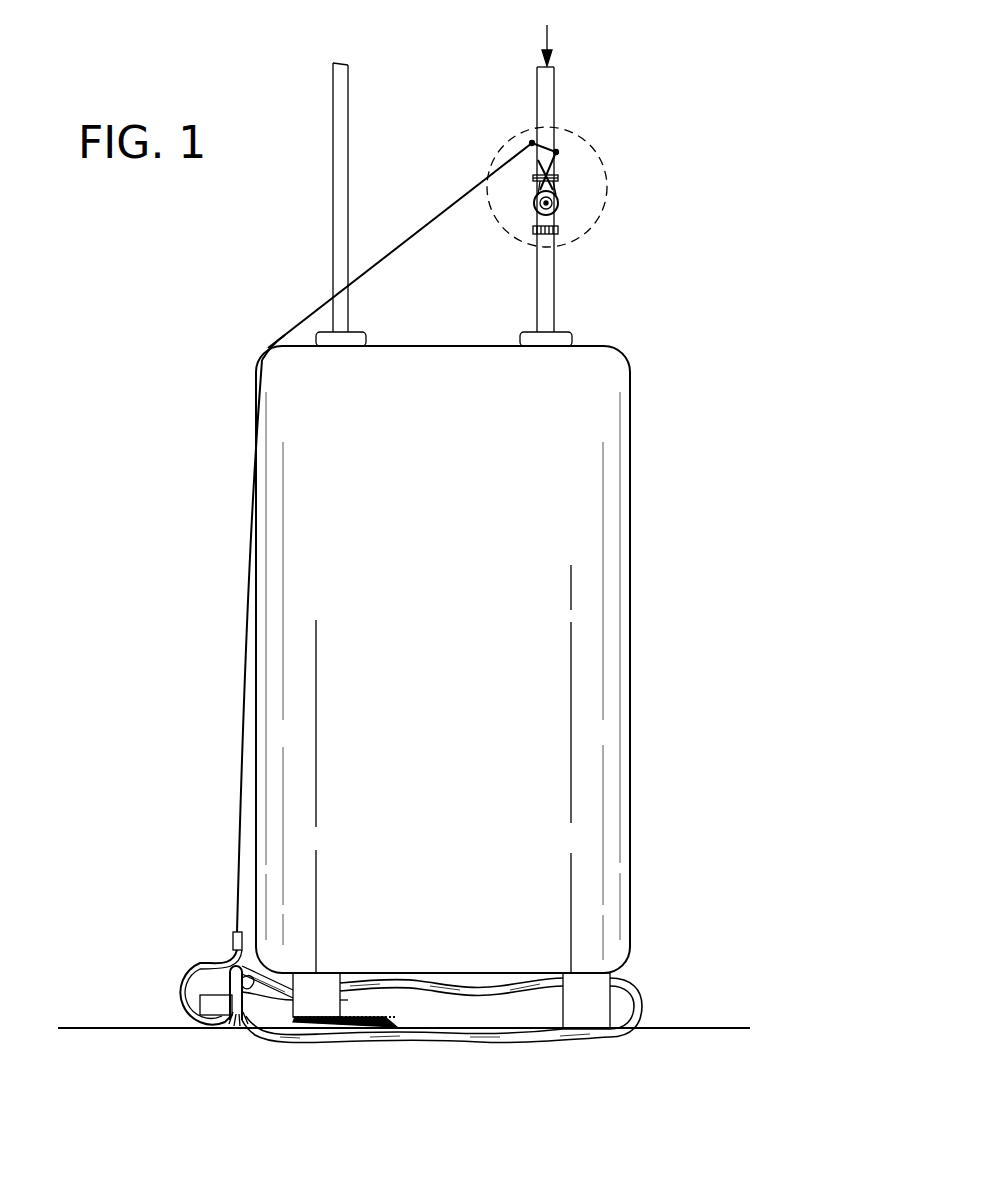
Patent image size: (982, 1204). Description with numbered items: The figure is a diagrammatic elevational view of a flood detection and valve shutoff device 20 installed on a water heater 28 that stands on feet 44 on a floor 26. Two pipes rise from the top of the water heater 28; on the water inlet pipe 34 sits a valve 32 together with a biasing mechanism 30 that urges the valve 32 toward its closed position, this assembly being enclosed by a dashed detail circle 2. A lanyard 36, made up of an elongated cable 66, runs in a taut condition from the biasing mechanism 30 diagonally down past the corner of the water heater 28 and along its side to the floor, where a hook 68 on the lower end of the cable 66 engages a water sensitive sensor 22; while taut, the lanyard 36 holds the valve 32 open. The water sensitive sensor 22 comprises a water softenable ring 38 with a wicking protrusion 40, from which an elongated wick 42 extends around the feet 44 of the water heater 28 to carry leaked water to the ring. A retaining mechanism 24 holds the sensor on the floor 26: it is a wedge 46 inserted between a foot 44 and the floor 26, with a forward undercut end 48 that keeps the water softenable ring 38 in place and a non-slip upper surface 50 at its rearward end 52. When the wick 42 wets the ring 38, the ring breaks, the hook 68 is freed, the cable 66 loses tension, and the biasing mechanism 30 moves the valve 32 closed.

The pulley assembly 2 is at (583, 126).
The flood detection and valve shutoff device 20 is at (399, 224).
The water sensitive sensor 22 is at (166, 972).
The retaining mechanism 24 is at (382, 1011).
The floor 26 is at (90, 1028).
The water heater 28 is at (612, 826).
The biasing mechanism 30 is at (570, 205).
The valve 32 is at (540, 232).
The water inlet pipe 34 is at (542, 102).
The lanyard 36 is at (298, 312).
The water softenable ring 38 is at (237, 1008).
The wicking protrusion 40 is at (237, 1026).
The elongated wick 42 is at (438, 1042).
The feet 44 is at (325, 985).
The wedge 46 is at (313, 1022).
The forward undercut end 48 is at (200, 1005).
The non-slip upper surface 50 is at (340, 1000).
The rearward end 52 is at (358, 1024).
The elongated cable 66 is at (244, 790).
The hook 68 is at (233, 940).